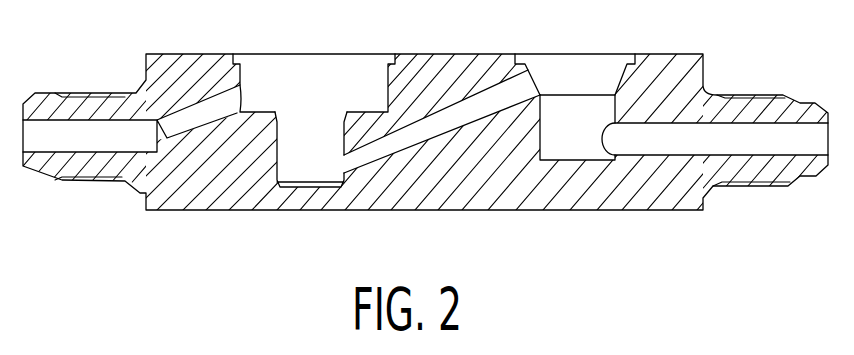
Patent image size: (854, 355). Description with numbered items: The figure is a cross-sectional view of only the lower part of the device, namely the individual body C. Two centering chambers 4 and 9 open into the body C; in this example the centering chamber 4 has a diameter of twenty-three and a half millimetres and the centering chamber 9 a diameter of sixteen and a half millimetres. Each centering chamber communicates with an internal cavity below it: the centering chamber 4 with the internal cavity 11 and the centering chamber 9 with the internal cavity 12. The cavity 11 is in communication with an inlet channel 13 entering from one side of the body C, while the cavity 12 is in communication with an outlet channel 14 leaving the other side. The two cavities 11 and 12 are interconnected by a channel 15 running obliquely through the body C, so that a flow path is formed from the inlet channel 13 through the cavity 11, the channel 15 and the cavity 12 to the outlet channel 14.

The centering chamber 4 is at (328, 58).
The centering chamber 9 is at (580, 62).
The internal cavity 11 is at (312, 160).
The internal cavity 12 is at (570, 127).
The inlet channel 13 is at (85, 128).
The outlet channel 14 is at (780, 137).
The channel 15 is at (487, 97).
The body C is at (668, 218).